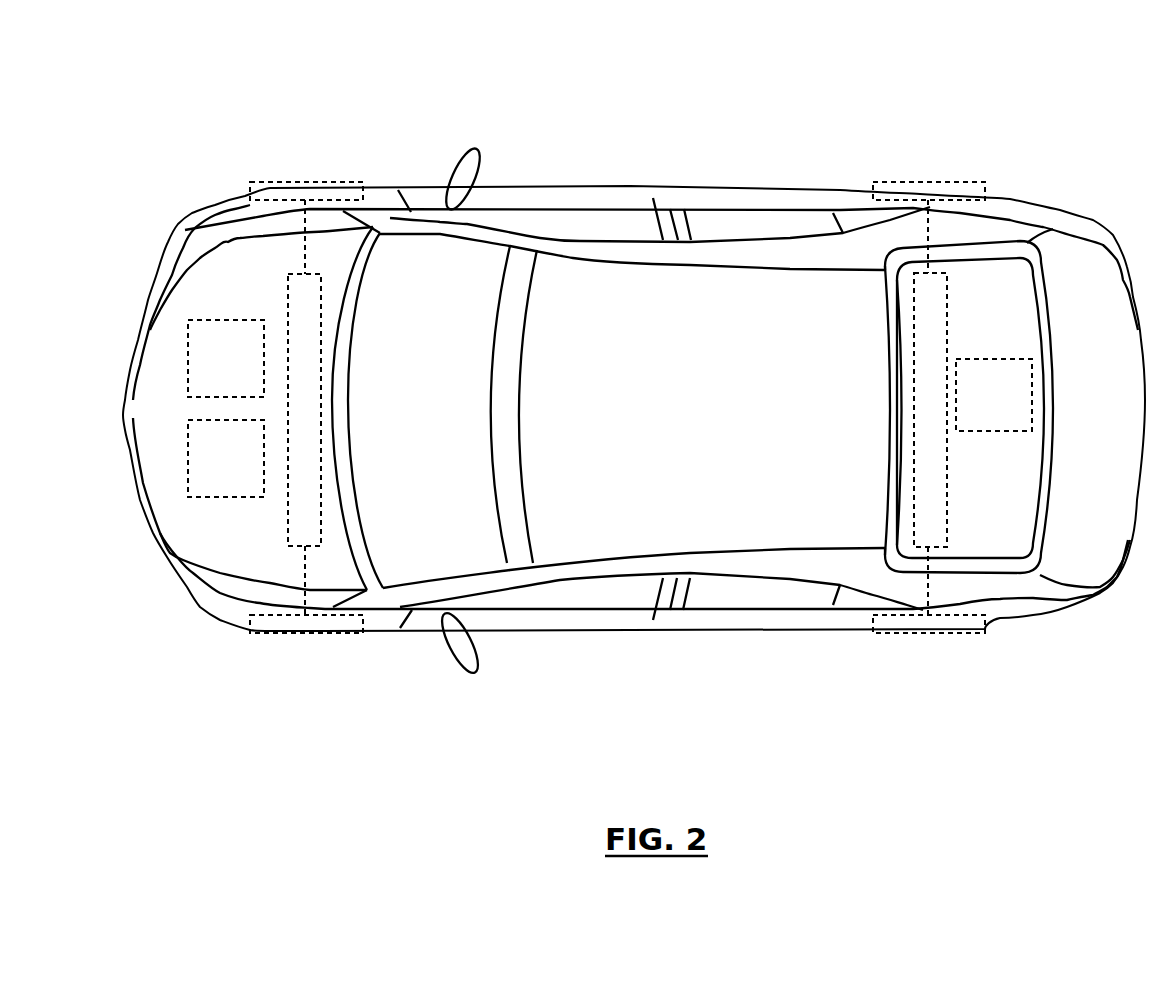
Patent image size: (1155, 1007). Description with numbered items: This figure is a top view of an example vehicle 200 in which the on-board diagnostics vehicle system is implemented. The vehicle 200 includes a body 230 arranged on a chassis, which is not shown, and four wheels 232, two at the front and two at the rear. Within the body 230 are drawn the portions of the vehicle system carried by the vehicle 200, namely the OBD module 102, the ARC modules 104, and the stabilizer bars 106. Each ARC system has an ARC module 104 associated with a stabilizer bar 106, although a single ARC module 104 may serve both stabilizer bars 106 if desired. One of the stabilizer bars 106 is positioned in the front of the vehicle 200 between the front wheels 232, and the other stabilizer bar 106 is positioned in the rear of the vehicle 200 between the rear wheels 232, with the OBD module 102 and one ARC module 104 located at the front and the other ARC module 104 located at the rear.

The OBD module 102 is at (212, 320).
The ARC module 104 is at (198, 497).
The stabilizer bar 106 is at (289, 533).
The vehicle 200 is at (649, 85).
The body 230 is at (715, 182).
The wheels 232 is at (283, 182).